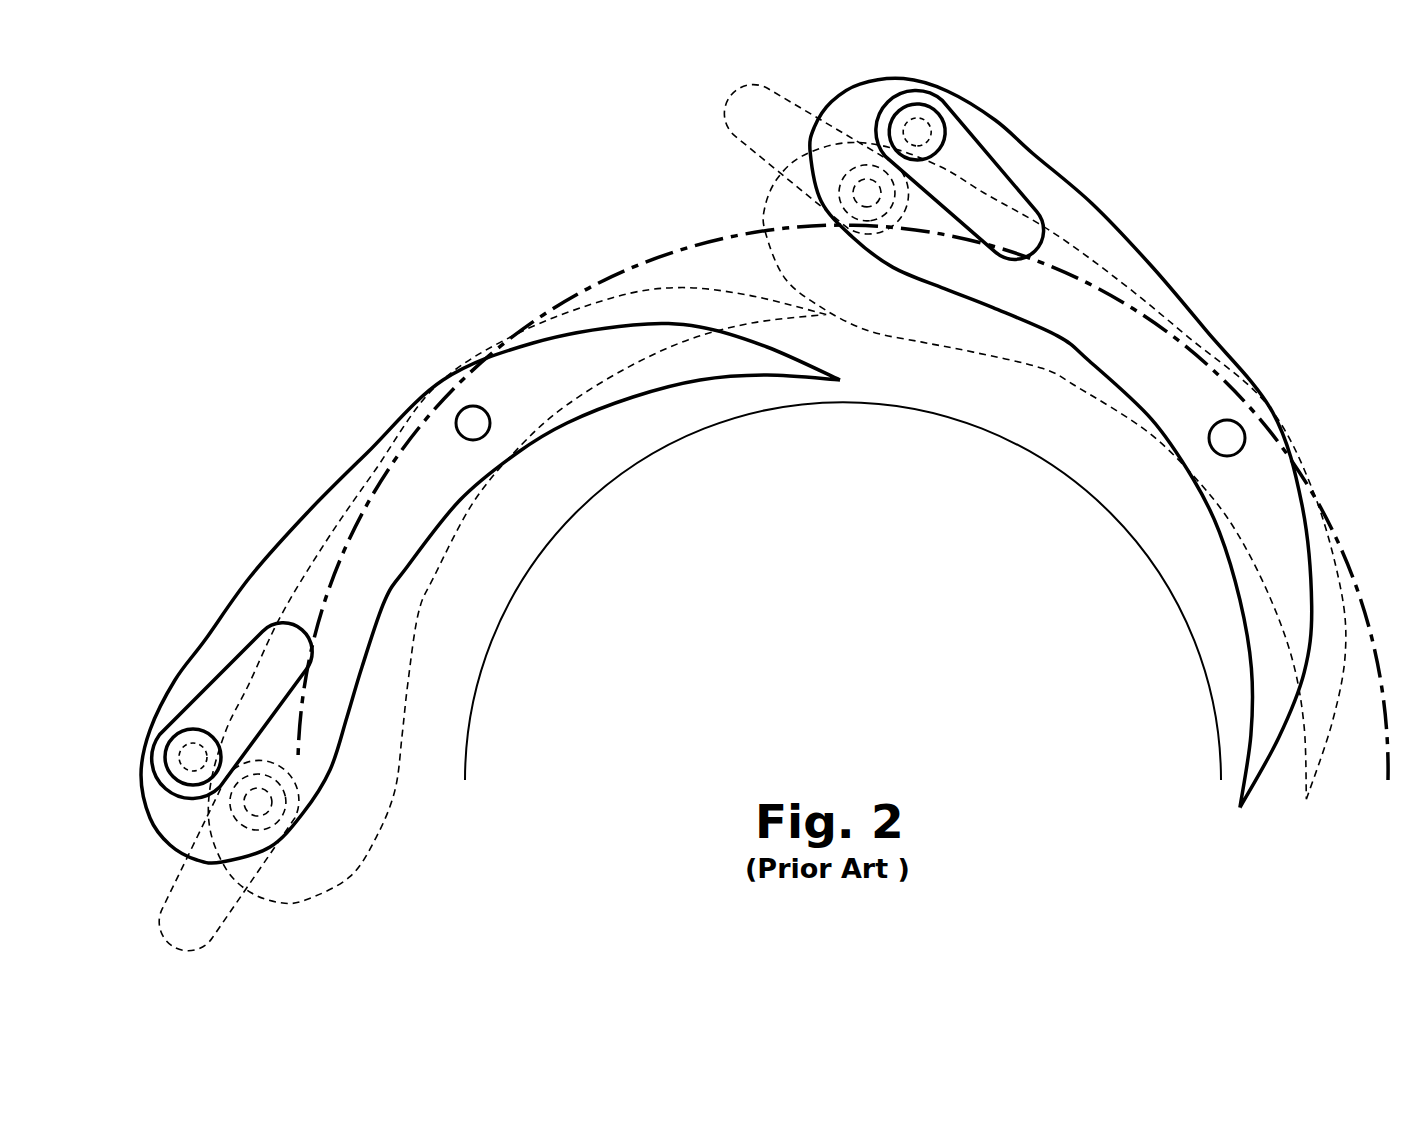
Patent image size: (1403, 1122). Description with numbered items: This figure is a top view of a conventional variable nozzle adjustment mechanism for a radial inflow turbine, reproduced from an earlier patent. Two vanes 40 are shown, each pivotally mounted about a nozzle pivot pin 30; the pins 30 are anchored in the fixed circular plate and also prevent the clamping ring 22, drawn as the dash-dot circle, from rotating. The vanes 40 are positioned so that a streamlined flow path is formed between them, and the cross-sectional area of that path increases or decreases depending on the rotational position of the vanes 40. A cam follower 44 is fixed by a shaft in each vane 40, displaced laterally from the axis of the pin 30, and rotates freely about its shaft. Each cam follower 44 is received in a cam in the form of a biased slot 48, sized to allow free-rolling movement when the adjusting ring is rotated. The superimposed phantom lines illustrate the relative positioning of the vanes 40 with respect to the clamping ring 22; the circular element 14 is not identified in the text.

The circular body 14 is at (1041, 458).
The clamping ring 22 is at (655, 266).
The nozzle pivot pins 30 is at (1240, 425).
The vanes 40 is at (1133, 243).
The cam followers 44 is at (942, 140).
The biased slots 48 is at (1010, 187).